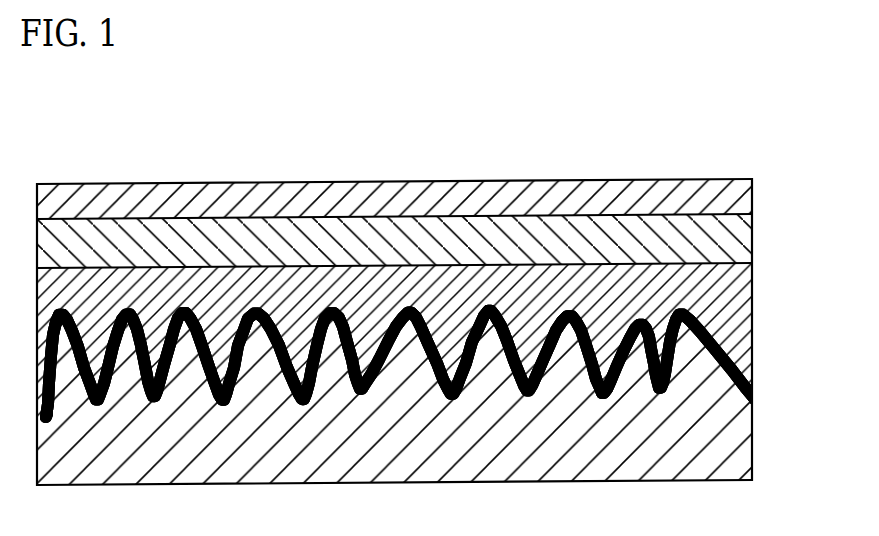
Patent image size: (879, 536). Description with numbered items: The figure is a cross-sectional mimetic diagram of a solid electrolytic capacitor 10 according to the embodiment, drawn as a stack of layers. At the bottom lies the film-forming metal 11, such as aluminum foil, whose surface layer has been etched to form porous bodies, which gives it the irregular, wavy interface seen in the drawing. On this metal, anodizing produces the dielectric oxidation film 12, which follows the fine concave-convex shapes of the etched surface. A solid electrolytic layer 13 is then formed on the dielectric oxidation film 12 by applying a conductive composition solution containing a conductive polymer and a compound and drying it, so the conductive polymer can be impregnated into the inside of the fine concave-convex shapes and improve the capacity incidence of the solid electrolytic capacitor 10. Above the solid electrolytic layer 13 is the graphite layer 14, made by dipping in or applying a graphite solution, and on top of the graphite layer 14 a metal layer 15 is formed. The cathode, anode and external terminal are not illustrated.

The solid electrolytic capacitor 10 is at (428, 264).
The film-forming metal 11 is at (740, 450).
The dielectric oxidation film 12 is at (740, 378).
The solid electrolytic layer 13 is at (737, 322).
The graphite layer 14 is at (737, 240).
The metal layer 15 is at (746, 206).